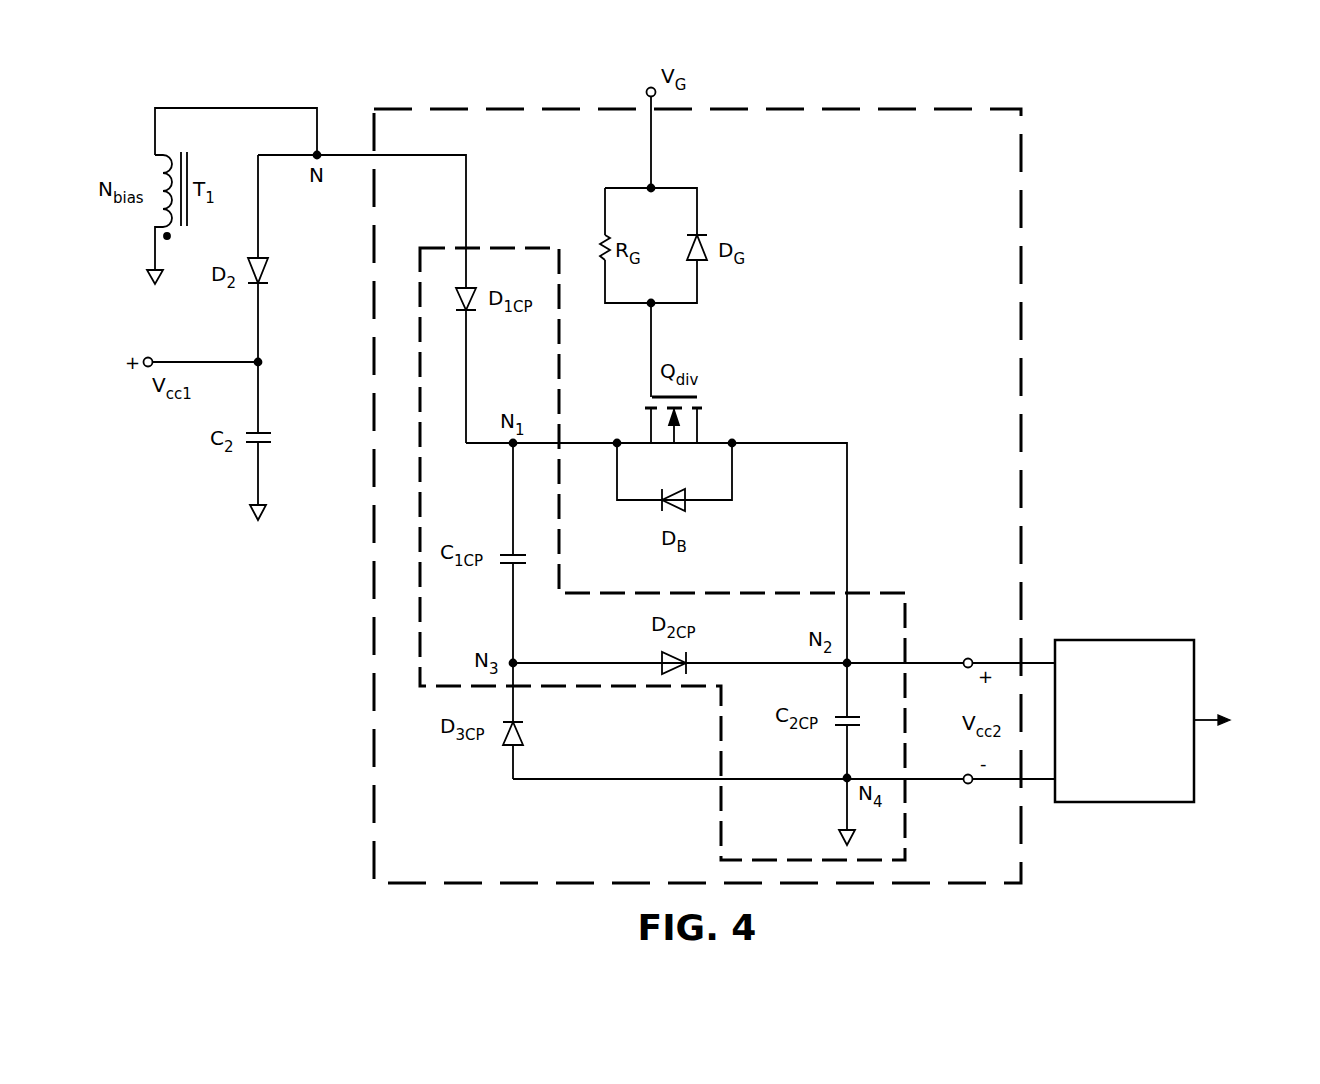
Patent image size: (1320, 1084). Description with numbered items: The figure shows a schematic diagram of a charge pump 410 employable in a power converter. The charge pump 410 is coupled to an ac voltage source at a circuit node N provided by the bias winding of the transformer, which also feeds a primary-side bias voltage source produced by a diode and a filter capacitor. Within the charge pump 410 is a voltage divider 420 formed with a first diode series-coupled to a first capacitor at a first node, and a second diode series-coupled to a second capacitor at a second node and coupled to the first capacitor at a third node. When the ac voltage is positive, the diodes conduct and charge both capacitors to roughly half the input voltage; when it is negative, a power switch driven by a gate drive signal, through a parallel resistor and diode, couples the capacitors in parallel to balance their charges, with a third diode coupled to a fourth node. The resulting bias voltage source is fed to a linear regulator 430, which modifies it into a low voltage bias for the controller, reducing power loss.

The charge pump 410 is at (1022, 221).
The voltage divider 420 is at (907, 631).
The linear regulator 430 is at (1147, 755).